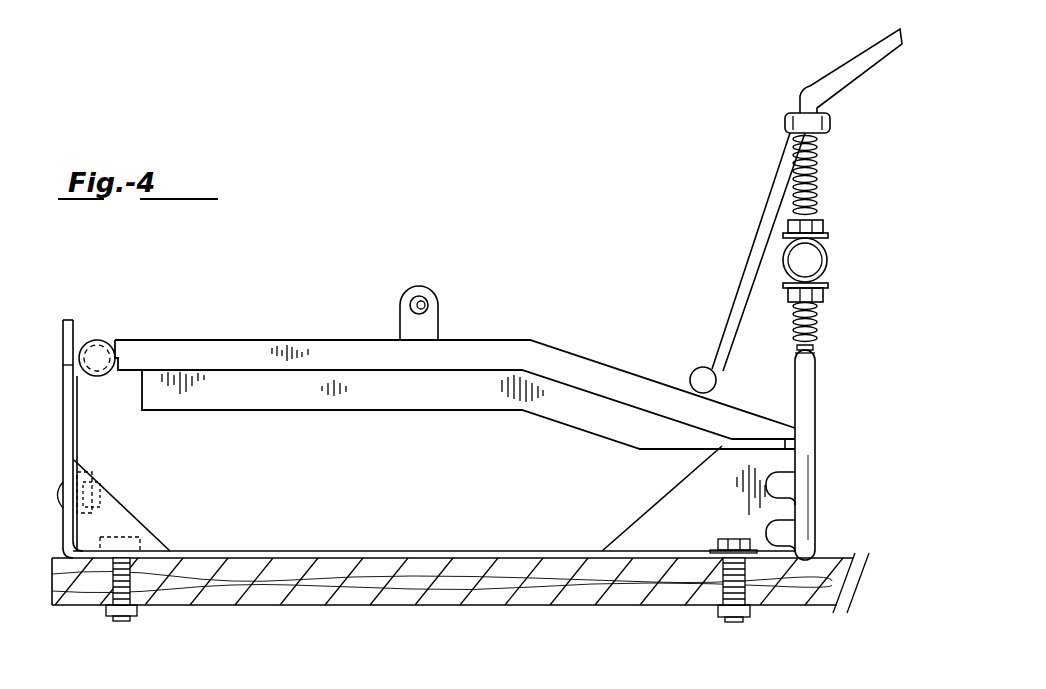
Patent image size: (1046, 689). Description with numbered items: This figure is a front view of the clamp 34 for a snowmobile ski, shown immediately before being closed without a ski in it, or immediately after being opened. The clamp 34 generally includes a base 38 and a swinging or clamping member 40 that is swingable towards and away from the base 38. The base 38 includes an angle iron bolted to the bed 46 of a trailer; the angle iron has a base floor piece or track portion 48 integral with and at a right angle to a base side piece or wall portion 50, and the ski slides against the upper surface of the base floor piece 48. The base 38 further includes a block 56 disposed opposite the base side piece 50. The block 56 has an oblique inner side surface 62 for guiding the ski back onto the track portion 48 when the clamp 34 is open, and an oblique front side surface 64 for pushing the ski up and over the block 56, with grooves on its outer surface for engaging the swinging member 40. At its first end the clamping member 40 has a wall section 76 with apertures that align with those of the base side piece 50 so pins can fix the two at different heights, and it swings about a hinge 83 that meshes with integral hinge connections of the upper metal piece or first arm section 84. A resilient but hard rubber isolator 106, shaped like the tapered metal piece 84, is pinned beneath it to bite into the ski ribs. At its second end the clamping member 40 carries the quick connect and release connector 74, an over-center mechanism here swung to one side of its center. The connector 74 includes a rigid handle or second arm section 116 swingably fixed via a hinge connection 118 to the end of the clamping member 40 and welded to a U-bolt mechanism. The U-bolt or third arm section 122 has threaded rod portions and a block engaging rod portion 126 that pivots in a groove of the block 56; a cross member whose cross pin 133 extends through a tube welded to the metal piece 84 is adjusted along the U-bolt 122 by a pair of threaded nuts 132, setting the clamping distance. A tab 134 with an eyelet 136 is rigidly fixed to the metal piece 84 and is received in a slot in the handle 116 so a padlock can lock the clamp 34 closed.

The clamp 34 is at (393, 240).
The base 38 is at (447, 553).
The swinging or clamping member 40 is at (260, 340).
The bed 46 is at (408, 605).
The base floor piece or track portion 48 is at (310, 553).
The base side piece or wall portion 50 is at (53, 410).
The block 56 is at (623, 530).
The inner side surface 62 is at (677, 483).
The front side surface 64 is at (722, 519).
The quick connect and release connector 74 is at (850, 85).
The wall section 76 is at (75, 417).
The hinge 83 is at (96, 348).
The upper metal piece or first arm section 84 is at (170, 344).
The hard rubber isolator 106 is at (297, 398).
The handle or second arm section 116 is at (862, 53).
The hinge connection 118 is at (692, 372).
The U-bolt or third arm section 122 is at (818, 380).
The block engaging rod portion 126 is at (812, 535).
The threaded nuts 132 is at (825, 227).
The cross pin 133 is at (830, 267).
The tab 134 is at (440, 325).
The eyelet 136 is at (426, 301).